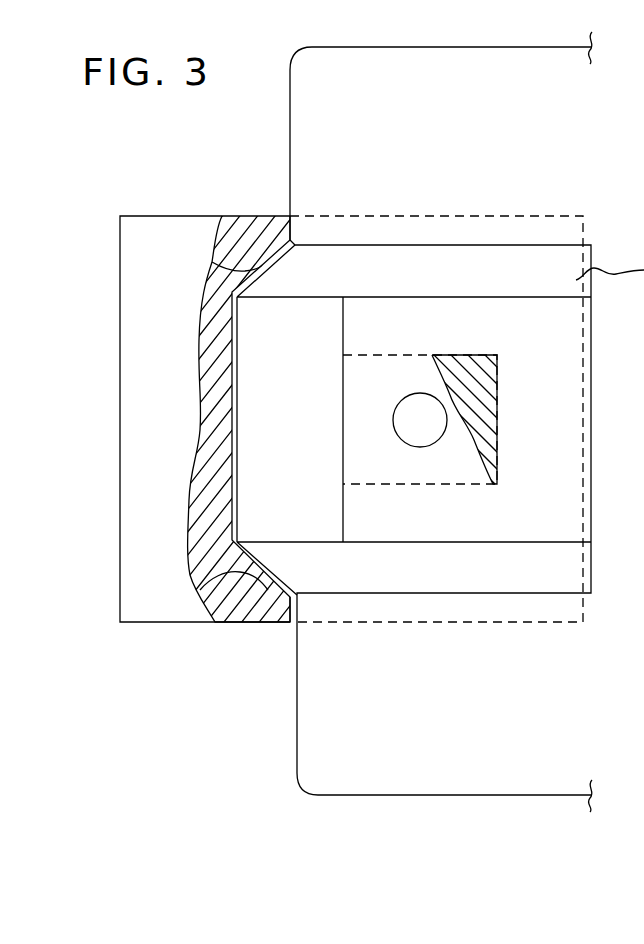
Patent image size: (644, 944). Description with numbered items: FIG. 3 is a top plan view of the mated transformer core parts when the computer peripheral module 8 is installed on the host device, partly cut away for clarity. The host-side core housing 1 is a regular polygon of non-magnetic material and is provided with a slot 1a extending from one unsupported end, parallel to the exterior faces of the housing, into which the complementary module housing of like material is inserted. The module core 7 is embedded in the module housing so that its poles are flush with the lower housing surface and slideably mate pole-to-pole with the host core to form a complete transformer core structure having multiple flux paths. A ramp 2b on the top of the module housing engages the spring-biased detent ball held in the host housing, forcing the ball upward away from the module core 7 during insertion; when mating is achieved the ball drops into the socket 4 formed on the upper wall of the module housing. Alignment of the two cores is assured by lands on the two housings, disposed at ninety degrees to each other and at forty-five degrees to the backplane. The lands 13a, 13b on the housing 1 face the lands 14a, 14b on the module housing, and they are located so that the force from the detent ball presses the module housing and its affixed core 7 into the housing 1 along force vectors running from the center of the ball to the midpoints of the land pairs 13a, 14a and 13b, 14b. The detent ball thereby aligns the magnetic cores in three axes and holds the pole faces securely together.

The core housing 1 is at (120, 290).
The slot 1a is at (290, 622).
The ramp 2b is at (250, 428).
The socket 4 is at (401, 400).
The module core 7 is at (478, 356).
The computer peripheral module 8 is at (440, 782).
The land 13a is at (213, 262).
The land 13b is at (200, 590).
The land 14a is at (262, 265).
The land 14b is at (265, 562).